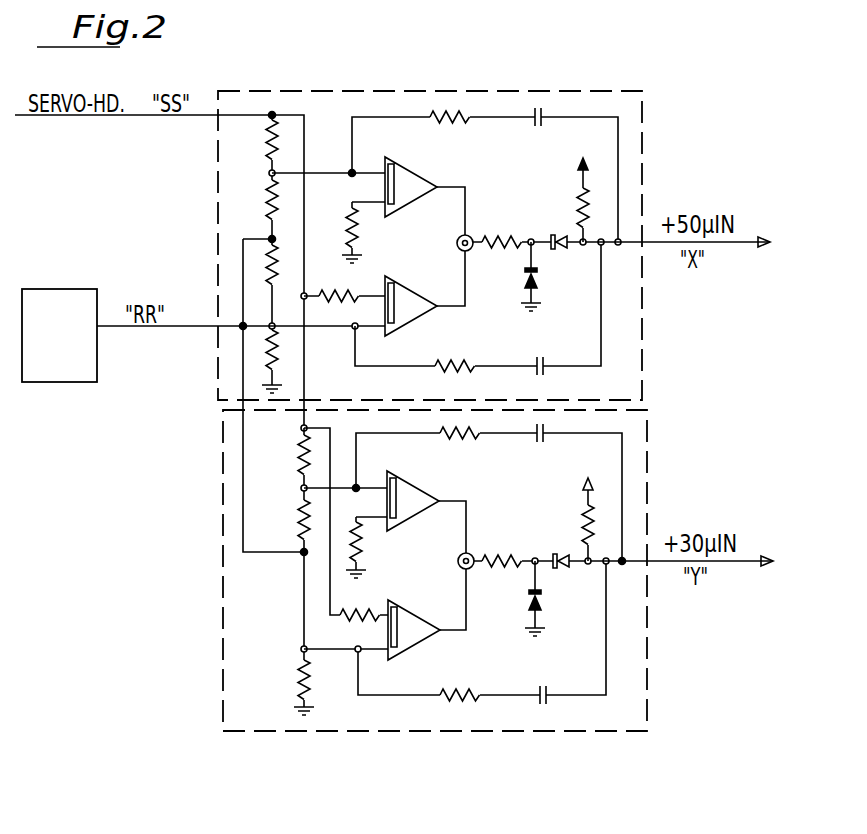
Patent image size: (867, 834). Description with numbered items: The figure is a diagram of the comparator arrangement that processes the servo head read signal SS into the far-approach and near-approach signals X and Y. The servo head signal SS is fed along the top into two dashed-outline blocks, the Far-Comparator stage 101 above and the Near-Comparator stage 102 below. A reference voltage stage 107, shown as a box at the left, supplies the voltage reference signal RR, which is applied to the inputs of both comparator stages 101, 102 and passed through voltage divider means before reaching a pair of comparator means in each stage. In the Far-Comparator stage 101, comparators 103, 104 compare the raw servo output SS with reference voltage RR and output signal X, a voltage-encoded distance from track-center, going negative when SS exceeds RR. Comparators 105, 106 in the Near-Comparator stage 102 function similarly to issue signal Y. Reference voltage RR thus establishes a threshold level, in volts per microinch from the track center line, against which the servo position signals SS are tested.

The Far-Comparator stage 101 is at (642, 143).
The Near-Comparator stage 102 is at (648, 677).
The comparator 103 is at (417, 181).
The comparator 104 is at (410, 292).
The comparator 105 is at (423, 490).
The comparator 106 is at (413, 617).
The reference voltage stage 107 is at (70, 383).